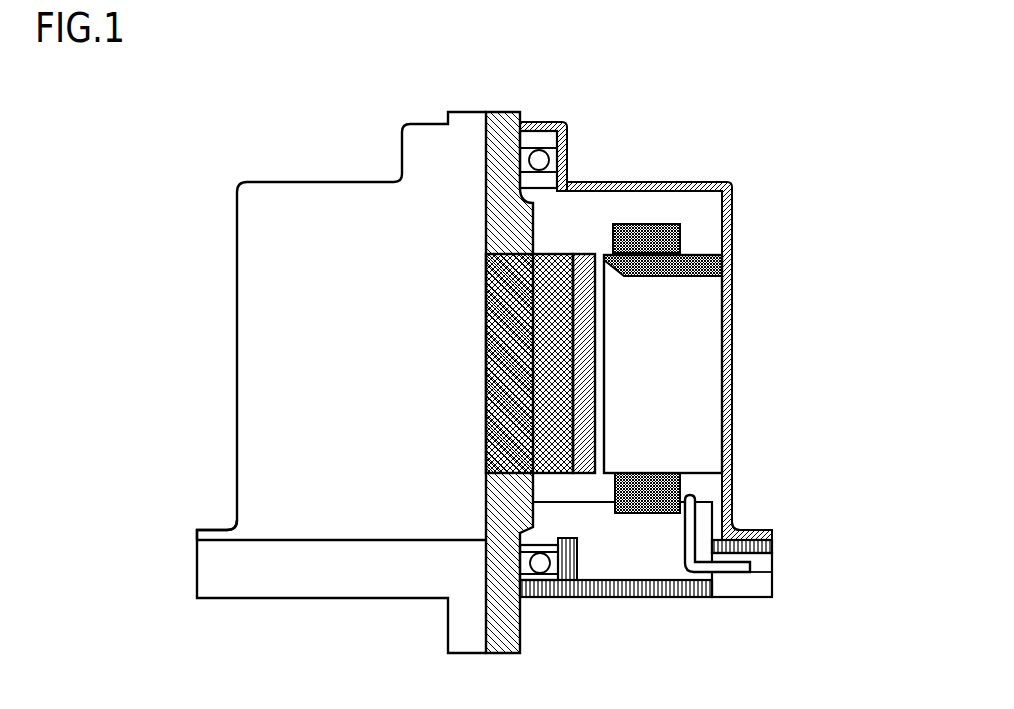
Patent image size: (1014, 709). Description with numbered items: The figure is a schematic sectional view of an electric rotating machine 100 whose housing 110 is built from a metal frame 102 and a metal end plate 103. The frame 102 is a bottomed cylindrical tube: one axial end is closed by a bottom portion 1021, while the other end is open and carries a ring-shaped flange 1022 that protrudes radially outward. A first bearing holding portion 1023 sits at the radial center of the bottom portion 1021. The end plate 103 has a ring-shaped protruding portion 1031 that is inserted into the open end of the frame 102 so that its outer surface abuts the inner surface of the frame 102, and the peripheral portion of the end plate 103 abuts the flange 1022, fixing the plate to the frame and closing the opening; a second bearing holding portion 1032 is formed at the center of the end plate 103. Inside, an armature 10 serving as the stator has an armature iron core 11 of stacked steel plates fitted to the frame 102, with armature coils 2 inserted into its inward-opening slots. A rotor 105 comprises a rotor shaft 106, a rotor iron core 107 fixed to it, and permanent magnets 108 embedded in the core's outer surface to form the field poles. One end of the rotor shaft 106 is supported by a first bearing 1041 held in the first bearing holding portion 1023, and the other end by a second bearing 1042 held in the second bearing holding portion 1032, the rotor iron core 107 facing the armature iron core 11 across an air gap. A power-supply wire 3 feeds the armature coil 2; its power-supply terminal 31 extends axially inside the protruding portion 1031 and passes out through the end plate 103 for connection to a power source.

The electric rotating machine 100 is at (375, 95).
The housing 110 is at (117, 562).
The frame 102 is at (258, 466).
The bottom portion 1021 is at (283, 182).
The flange 1022 is at (217, 530).
The end plate 103 is at (220, 577).
The ring-shaped protruding portion 1031 is at (707, 497).
The second bearing holding portion 1032 is at (615, 598).
The first bearing 1041 is at (536, 123).
The second bearing 1042 is at (527, 598).
The first bearing holding portion 1023 is at (572, 148).
The rotor 105 is at (765, 110).
The rotor shaft 106 is at (538, 253).
The rotor iron core 107 is at (588, 253).
The permanent magnets 108 is at (613, 223).
The armature coil 2 is at (684, 240).
The armature 10 is at (710, 312).
The armature iron core 11 is at (700, 370).
The power-supply wire 3 is at (685, 535).
The power-supply terminal 31 is at (772, 572).